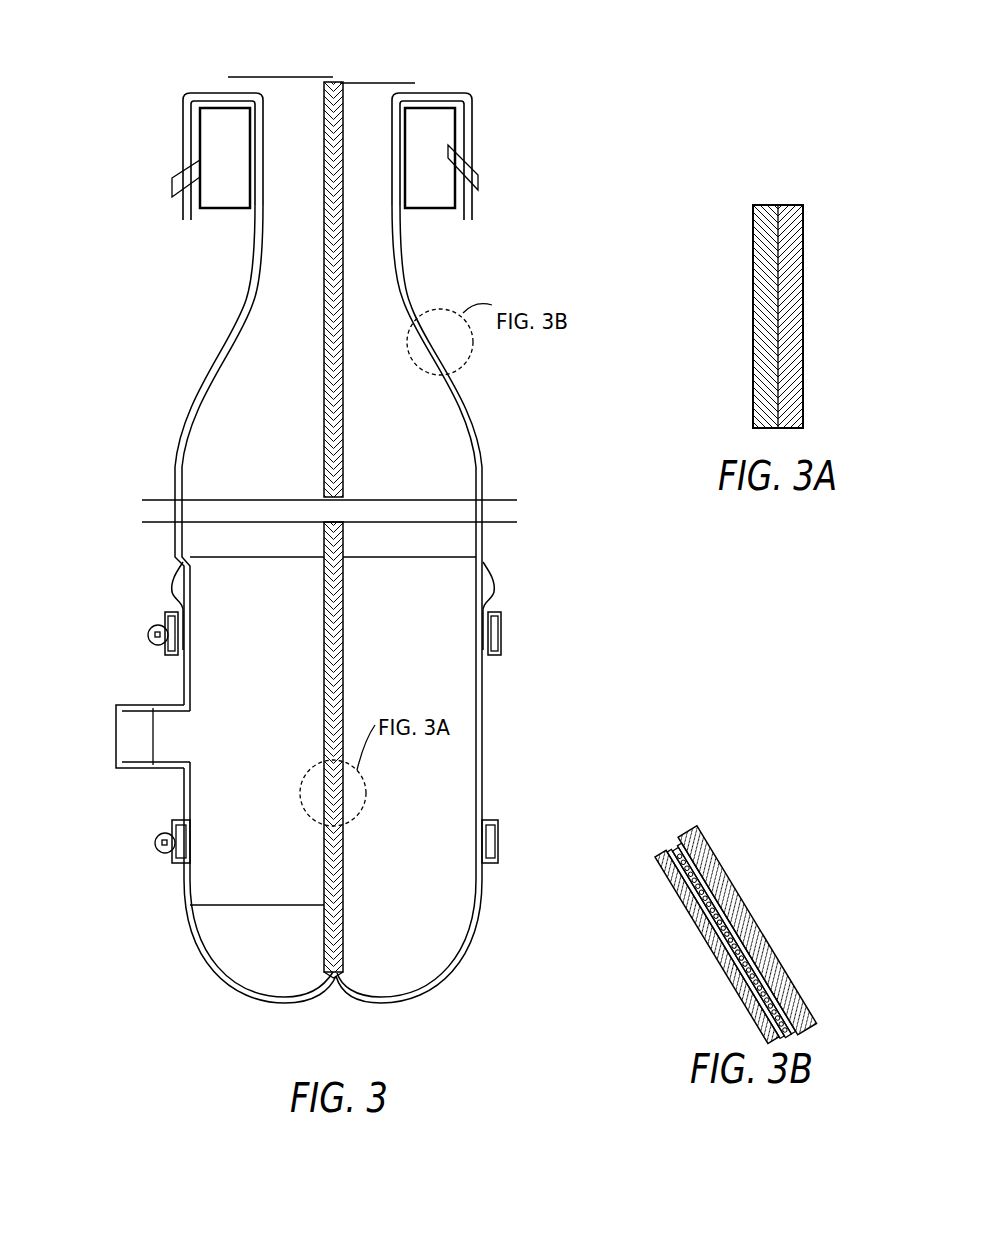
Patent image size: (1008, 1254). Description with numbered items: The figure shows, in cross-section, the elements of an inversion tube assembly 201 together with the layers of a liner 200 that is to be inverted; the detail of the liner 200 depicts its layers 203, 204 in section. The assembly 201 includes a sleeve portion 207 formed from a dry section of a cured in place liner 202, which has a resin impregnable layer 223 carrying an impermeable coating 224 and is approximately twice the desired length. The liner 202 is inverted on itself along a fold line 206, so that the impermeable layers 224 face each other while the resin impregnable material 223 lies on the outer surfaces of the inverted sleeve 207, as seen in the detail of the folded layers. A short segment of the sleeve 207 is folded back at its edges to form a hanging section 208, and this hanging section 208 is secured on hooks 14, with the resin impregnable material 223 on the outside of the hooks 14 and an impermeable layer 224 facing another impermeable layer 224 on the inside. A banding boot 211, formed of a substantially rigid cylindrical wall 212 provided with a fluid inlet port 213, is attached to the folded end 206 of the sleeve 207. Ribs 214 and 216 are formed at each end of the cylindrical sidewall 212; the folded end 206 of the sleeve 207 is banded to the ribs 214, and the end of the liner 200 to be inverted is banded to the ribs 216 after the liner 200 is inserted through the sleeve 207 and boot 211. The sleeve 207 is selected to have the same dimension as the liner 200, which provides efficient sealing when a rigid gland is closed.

In FIG. 3, the hooks 14 is at (525, 168).
In FIG. 3, the liner 200 is at (343, 120).
In FIG. 3A, the liner 200 is at (742, 372).
In FIG. 3, the inversion tube assembly 201 is at (503, 434).
In FIG. 3B, the cured in place liner 202 is at (803, 959).
In FIG. 3A, the outer layer 203 is at (765, 232).
In FIG. 3A, the inner layer 204 is at (753, 283).
In FIG. 3, the fold line 206 is at (490, 660).
In FIG. 3, the sleeve portion 207 is at (407, 268).
In FIG. 3, the hanging section 208 is at (177, 88).
In FIG. 3, the banding boot 211 is at (100, 704).
In FIG. 3, the cylindrical wall 212 is at (478, 787).
In FIG. 3, the fluid inlet port 213 is at (170, 740).
In FIG. 3, the ribs 214 is at (173, 580).
In FIG. 3, the ribs 216 is at (498, 837).
In FIG. 3B, the resin impregnable layer 223 is at (750, 915).
In FIG. 3B, the impermeable coating 224 is at (723, 865).